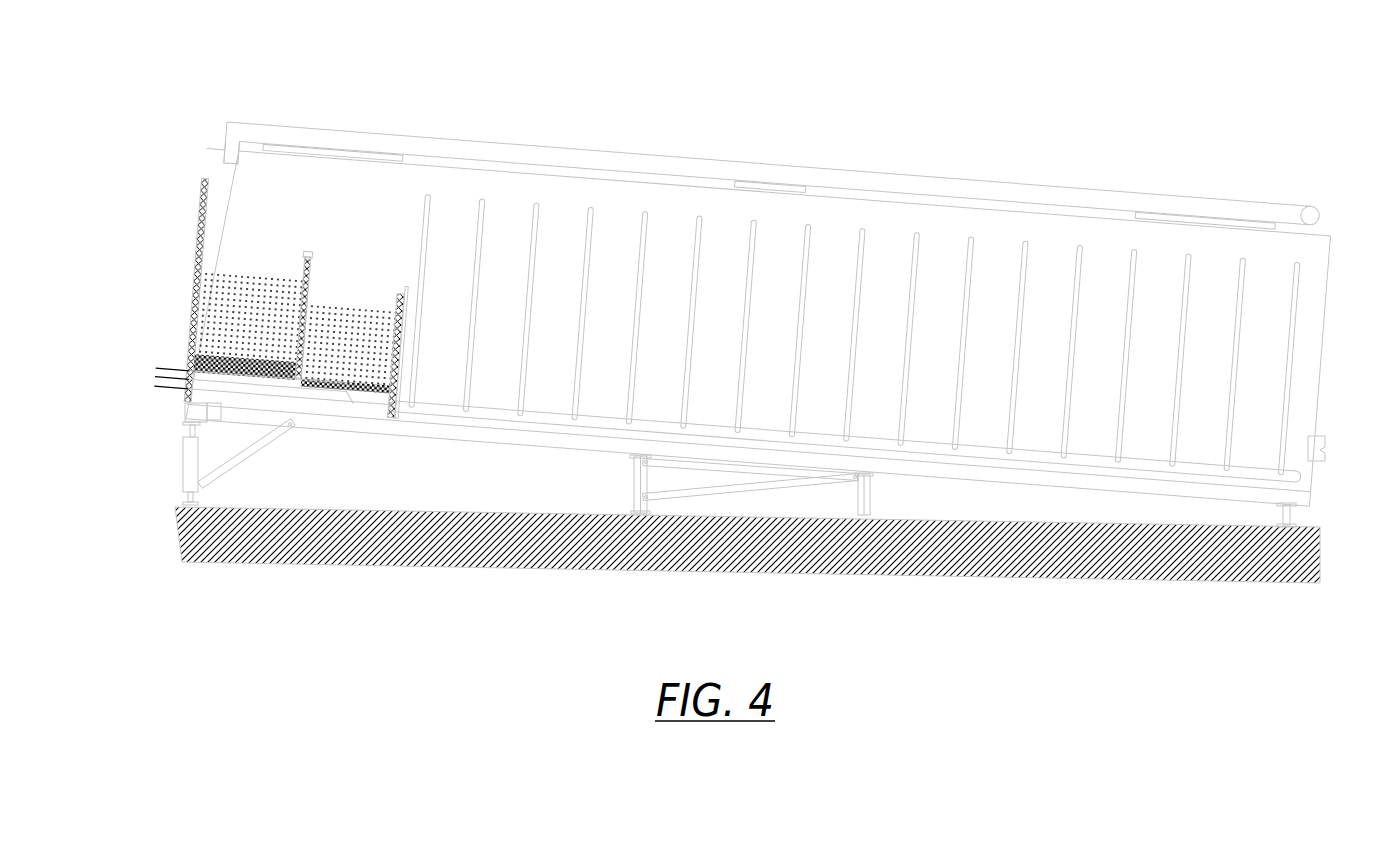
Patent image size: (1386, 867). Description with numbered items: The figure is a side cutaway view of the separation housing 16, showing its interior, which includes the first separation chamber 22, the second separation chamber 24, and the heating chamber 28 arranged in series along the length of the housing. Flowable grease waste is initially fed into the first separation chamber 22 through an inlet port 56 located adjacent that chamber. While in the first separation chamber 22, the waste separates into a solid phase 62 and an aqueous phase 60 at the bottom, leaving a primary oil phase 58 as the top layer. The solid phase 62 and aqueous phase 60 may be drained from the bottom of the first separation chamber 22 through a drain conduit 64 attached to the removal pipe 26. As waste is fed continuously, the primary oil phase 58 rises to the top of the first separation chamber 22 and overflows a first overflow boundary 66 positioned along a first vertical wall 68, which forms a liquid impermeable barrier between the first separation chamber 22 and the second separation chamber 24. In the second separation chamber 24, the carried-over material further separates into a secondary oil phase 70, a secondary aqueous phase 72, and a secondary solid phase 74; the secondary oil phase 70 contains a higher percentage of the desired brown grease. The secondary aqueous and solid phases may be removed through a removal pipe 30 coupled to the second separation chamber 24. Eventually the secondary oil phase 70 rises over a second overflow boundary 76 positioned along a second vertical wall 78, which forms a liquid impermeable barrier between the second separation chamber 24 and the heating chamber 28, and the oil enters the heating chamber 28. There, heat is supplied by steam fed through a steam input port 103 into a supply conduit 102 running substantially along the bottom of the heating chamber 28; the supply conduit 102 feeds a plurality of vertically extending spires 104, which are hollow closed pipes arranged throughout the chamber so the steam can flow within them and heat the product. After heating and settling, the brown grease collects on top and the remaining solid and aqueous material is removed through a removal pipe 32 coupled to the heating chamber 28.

The separation housing 16 is at (379, 90).
The heating chamber 28 is at (514, 180).
The inlet port 56 is at (231, 167).
The first separation chamber 22 is at (264, 234).
The first overflow boundary 66 is at (307, 256).
The second separation chamber 24 is at (352, 240).
The first vertical wall 68 is at (306, 262).
The secondary oil phase 70 is at (325, 325).
The secondary aqueous phase 72 is at (350, 385).
The secondary solid phase 74 is at (385, 385).
The second overflow boundary 76 is at (398, 302).
The second vertical wall 78 is at (403, 330).
The primary oil phase 58 is at (204, 298).
The aqueous phase 60 is at (204, 327).
The solid phase 62 is at (204, 357).
The removal pipe 26 is at (160, 371).
The removal pipe 30 is at (160, 378).
The steam input port 103 is at (160, 386).
The drain conduit 64 is at (241, 380).
The vertically extending spires 104 is at (638, 262).
The supply conduit 102 is at (600, 412).
The removal pipe 32 is at (1326, 442).